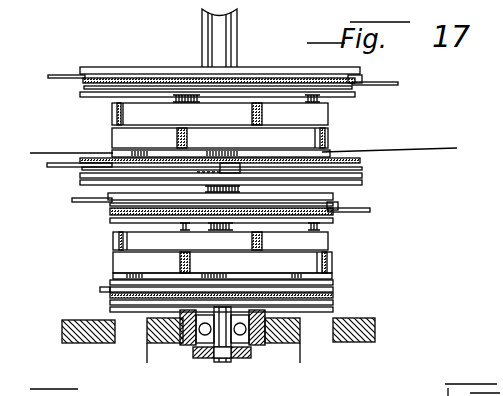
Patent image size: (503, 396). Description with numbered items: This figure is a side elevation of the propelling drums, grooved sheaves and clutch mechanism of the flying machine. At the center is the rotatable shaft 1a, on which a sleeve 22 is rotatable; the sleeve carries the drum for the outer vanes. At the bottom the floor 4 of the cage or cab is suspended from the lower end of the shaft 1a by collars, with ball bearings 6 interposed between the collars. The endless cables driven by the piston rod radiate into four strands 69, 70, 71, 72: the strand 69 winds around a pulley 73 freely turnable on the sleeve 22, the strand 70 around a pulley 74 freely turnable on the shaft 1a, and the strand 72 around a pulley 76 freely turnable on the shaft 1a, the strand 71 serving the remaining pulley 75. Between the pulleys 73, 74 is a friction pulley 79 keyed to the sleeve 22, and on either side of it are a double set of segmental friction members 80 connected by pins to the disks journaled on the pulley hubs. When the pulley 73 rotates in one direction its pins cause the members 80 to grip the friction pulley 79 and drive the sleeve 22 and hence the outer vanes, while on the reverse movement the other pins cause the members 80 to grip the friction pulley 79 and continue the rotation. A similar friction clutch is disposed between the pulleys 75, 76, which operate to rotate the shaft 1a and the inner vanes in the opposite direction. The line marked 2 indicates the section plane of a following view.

The shaft 1a is at (213, 352).
The section line 2 is at (240, 154).
The floor 4 is at (352, 343).
The ball bearings 6 is at (258, 344).
The sleeve 22 is at (218, 44).
The strand 69 is at (50, 75).
The strand 70 is at (50, 170).
The strand 71 is at (75, 203).
The strand 72 is at (105, 289).
The pulley 73 is at (258, 77).
The pulley 74 is at (360, 160).
The pulley 75 is at (322, 199).
The pulley 76 is at (322, 283).
The friction pulley 79 is at (124, 127).
The segmental friction members 80 is at (331, 132).